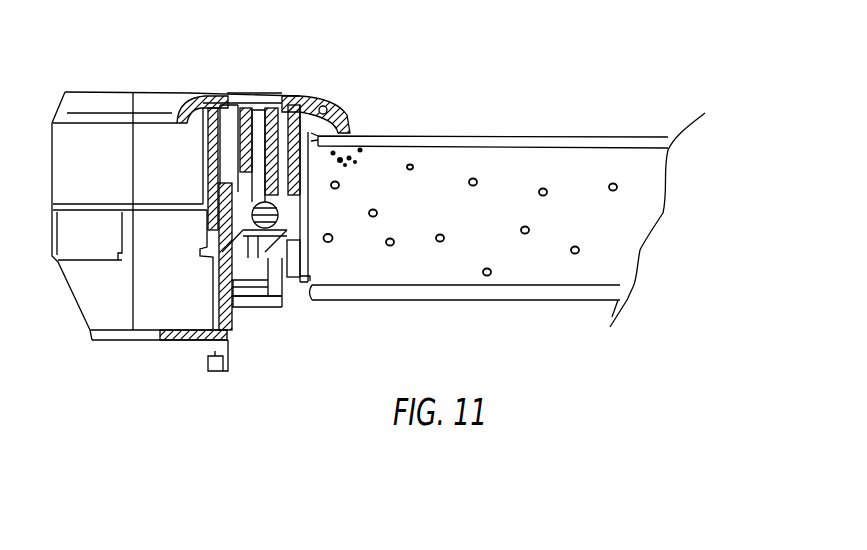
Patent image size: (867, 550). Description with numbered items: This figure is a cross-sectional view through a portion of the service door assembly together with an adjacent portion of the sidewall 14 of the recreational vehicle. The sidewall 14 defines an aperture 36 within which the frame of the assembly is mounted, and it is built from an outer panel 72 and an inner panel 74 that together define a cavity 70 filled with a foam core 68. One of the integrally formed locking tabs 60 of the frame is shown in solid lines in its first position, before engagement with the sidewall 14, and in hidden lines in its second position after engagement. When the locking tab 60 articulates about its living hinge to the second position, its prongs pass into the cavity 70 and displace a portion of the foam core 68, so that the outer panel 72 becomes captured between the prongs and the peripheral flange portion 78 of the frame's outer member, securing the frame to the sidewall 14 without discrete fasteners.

The locking tab 60 is at (211, 265).
The peripheral flange portion 78 is at (343, 107).
The sidewall 14 is at (553, 117).
The outer panel 72 is at (612, 150).
The cavity 70 is at (613, 152).
The foam core 68 is at (503, 236).
The inner panel 74 is at (565, 290).
The aperture 36 is at (304, 300).